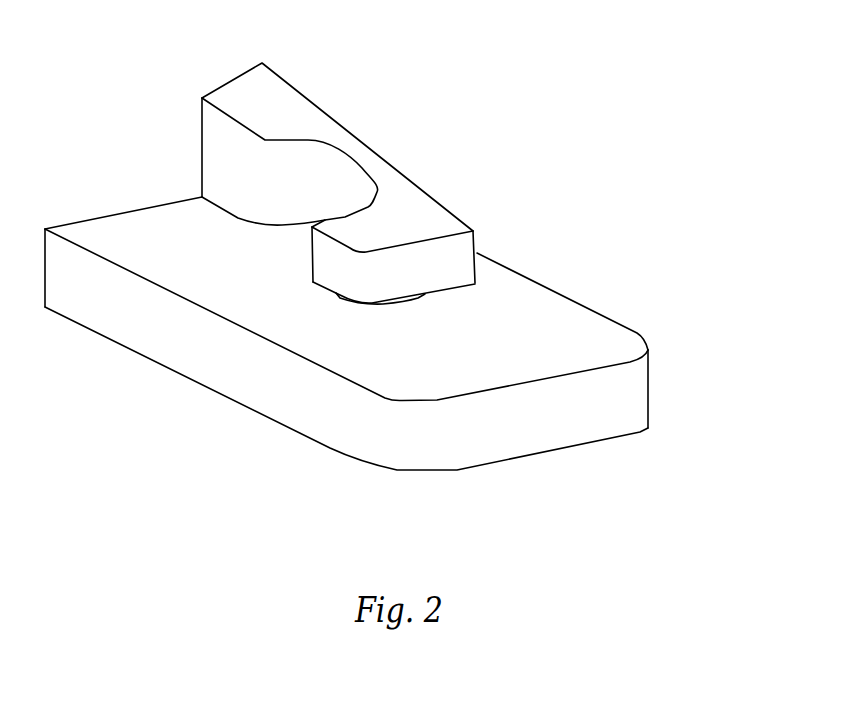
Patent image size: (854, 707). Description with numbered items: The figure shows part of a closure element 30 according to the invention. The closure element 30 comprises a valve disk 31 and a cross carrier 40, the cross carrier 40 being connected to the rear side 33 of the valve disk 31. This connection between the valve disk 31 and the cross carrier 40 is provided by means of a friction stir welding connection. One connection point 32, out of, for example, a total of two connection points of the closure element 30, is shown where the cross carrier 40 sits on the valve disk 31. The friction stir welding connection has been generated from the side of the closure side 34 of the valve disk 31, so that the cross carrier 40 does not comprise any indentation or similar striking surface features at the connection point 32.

The closure element 30 is at (162, 50).
The valve disk 31 is at (647, 310).
The connection point 32 is at (365, 305).
The rear side 33 is at (533, 305).
The closure side 34 is at (565, 457).
The cross carrier 40 is at (315, 123).